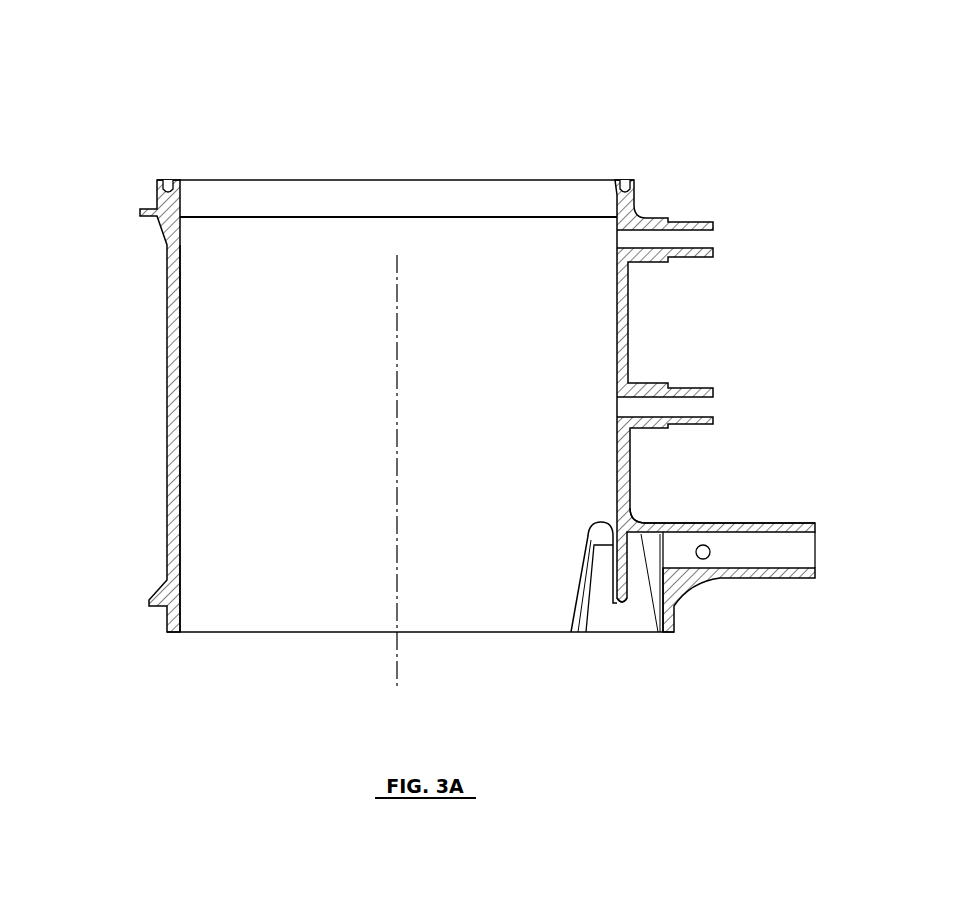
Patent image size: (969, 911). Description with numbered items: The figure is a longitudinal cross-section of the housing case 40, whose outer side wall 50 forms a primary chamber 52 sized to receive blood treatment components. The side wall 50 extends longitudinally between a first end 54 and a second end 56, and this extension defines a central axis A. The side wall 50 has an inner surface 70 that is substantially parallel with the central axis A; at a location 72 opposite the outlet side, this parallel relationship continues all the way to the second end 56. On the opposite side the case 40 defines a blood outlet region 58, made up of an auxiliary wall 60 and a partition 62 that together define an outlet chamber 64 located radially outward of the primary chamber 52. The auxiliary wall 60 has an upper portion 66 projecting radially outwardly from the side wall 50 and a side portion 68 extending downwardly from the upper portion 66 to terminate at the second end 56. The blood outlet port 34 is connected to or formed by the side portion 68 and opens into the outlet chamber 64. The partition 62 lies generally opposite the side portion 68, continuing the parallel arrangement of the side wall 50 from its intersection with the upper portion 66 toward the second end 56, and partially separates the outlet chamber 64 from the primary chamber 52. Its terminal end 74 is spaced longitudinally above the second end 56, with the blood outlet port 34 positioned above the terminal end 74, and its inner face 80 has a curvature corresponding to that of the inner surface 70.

The case 40 is at (473, 125).
The primary chamber 52 is at (296, 262).
The central axis A is at (397, 333).
The outer side wall 50 is at (168, 385).
The location opposite the blood outlet region 72 is at (168, 478).
The second end 56 is at (195, 637).
The inner surface 70 is at (618, 320).
The first end 54 is at (613, 178).
The upper portion 66 is at (645, 522).
The auxiliary wall 60 is at (660, 520).
The blood outlet port 34 is at (773, 527).
The outlet chamber 64 is at (677, 594).
The side portion 68 is at (676, 628).
The blood outlet region 58 is at (643, 634).
The partition 62 is at (621, 553).
The inner face 80 is at (612, 575).
The terminal end 74 is at (614, 620).